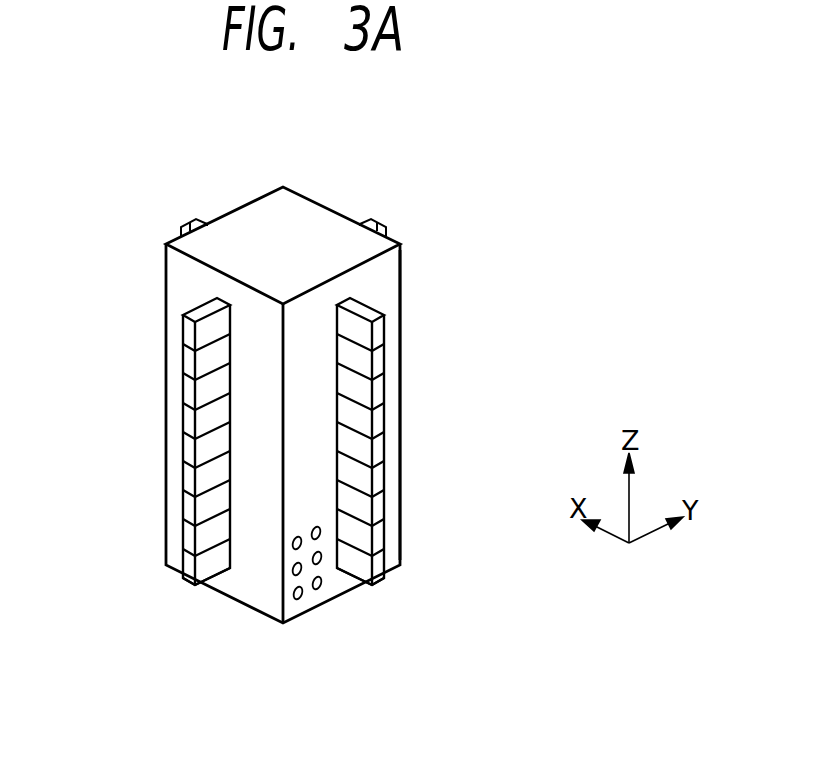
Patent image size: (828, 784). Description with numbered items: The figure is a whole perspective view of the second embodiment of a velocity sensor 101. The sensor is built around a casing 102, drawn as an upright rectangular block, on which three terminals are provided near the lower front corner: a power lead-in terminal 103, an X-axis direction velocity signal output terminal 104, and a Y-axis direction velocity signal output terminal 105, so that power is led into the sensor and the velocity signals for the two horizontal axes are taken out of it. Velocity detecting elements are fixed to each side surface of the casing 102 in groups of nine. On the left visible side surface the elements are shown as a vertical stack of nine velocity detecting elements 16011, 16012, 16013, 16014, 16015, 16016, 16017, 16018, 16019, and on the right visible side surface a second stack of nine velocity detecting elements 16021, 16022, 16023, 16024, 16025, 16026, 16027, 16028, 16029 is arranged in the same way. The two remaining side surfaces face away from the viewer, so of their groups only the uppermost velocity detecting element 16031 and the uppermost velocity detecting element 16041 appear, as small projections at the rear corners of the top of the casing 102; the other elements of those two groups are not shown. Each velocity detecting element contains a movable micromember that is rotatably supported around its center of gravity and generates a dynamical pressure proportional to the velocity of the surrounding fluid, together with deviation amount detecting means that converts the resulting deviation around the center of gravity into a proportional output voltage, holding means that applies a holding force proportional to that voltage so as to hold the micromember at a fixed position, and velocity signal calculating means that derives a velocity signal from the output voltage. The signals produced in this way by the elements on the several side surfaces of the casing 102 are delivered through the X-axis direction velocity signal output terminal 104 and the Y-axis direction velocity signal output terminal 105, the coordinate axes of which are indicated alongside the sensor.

The velocity sensor 101 is at (323, 195).
The casing 102 is at (398, 258).
The power lead-in terminal 103 is at (245, 580).
The X-axis direction velocity signal output terminal 104 is at (312, 606).
The Y-axis direction velocity signal output terminal 105 is at (323, 626).
The velocity detecting element 16011 is at (183, 325).
The velocity detecting element 16012 is at (183, 355).
The velocity detecting element 16013 is at (183, 385).
The velocity detecting element 16014 is at (183, 418).
The velocity detecting element 16015 is at (183, 452).
The velocity detecting element 16016 is at (183, 483).
The velocity detecting element 16017 is at (183, 510).
The velocity detecting element 16018 is at (183, 538).
The velocity detecting element 16019 is at (183, 572).
The velocity detecting element 16021 is at (384, 323).
The velocity detecting element 16022 is at (384, 353).
The velocity detecting element 16023 is at (384, 385).
The velocity detecting element 16024 is at (384, 418).
The velocity detecting element 16025 is at (384, 452).
The velocity detecting element 16026 is at (384, 485).
The velocity detecting element 16027 is at (384, 513).
The velocity detecting element 16028 is at (384, 540).
The velocity detecting element 16029 is at (384, 568).
The velocity detecting element 16031 is at (377, 223).
The velocity detecting element 16041 is at (186, 227).